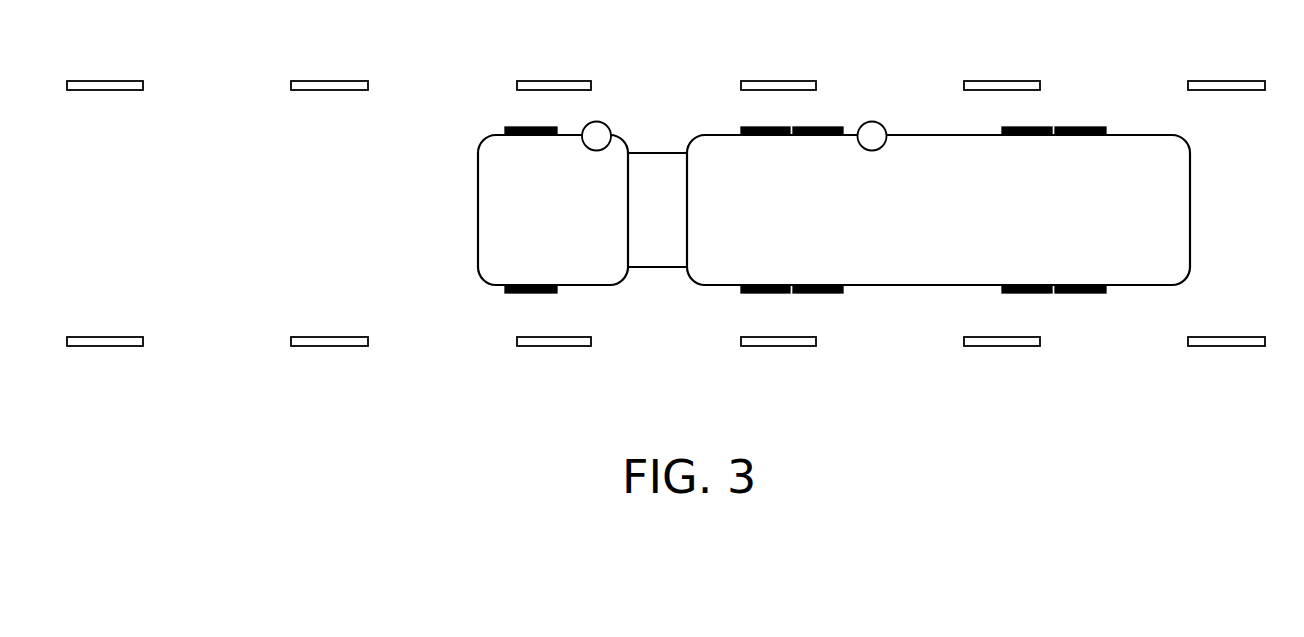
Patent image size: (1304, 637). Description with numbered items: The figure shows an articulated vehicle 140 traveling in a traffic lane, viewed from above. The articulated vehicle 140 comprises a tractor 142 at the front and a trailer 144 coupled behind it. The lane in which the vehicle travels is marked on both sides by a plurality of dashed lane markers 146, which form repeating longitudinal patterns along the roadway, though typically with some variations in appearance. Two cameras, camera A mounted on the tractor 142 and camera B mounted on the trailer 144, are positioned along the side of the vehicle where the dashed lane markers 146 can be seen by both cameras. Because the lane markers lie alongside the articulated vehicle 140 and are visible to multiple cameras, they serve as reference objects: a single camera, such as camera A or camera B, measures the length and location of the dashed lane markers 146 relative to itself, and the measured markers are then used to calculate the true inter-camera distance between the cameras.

The articulated vehicle 140 is at (834, 159).
The tractor 142 is at (573, 220).
The trailer 144 is at (957, 220).
The dashed lane markers 146 is at (328, 81).